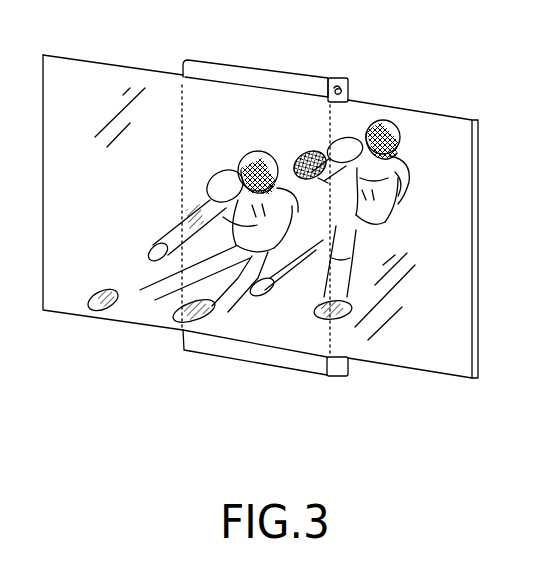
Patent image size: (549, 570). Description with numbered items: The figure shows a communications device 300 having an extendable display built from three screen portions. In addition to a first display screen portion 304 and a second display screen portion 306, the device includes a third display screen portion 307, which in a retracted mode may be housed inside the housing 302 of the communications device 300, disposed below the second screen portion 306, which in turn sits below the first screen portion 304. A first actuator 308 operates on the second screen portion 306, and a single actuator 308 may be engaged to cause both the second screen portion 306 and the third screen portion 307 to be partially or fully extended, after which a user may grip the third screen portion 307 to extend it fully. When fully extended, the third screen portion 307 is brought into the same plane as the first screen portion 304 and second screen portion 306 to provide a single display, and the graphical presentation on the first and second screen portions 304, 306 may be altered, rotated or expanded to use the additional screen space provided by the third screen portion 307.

The communications device 300 is at (150, 395).
The housing 302 is at (316, 365).
The first display screen portion 304 is at (190, 91).
The second display screen portion 306 is at (458, 373).
The third display screen portion 307 is at (67, 303).
The first actuator 308 is at (349, 89).